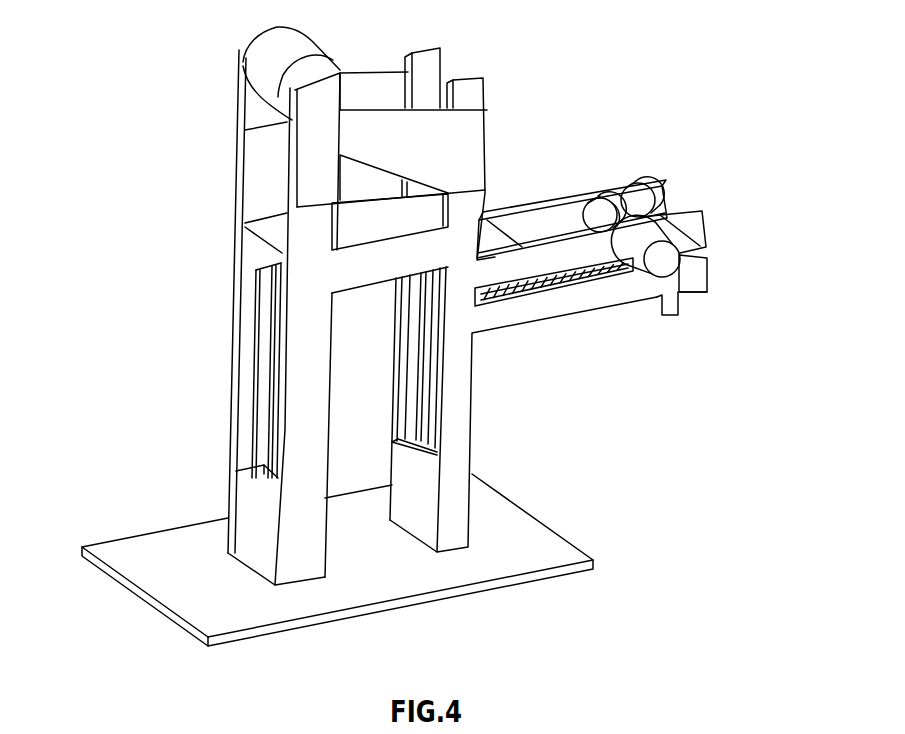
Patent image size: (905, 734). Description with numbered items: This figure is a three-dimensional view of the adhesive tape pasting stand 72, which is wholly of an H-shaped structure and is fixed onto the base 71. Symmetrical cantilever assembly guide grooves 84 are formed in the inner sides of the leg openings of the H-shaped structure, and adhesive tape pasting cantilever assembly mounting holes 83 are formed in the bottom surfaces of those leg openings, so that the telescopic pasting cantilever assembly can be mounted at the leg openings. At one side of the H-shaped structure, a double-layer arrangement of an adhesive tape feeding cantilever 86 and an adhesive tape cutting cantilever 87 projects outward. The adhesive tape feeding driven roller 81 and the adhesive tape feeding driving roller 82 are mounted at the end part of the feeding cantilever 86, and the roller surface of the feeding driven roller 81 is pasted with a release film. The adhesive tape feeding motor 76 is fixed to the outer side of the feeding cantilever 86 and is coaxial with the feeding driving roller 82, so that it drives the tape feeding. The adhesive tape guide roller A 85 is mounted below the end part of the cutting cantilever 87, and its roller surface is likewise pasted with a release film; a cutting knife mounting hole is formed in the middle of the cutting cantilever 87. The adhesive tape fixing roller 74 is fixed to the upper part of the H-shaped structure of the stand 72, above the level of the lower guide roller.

The base 71 is at (513, 557).
The adhesive tape pasting stand 72 is at (458, 405).
The adhesive tape fixing roller 74 is at (270, 65).
The adhesive tape feeding motor 76 is at (663, 265).
The adhesive tape feeding driven roller 81 is at (643, 205).
The adhesive tape feeding driving roller 82 is at (607, 213).
The adhesive tape pasting cantilever assembly mounting hole 83 is at (268, 487).
The cantilever assembly guide groove 84 is at (415, 375).
The adhesive tape guide roller A 85 is at (652, 303).
The adhesive tape feeding cantilever 86 is at (682, 230).
The adhesive tape cutting cantilever 87 is at (688, 275).